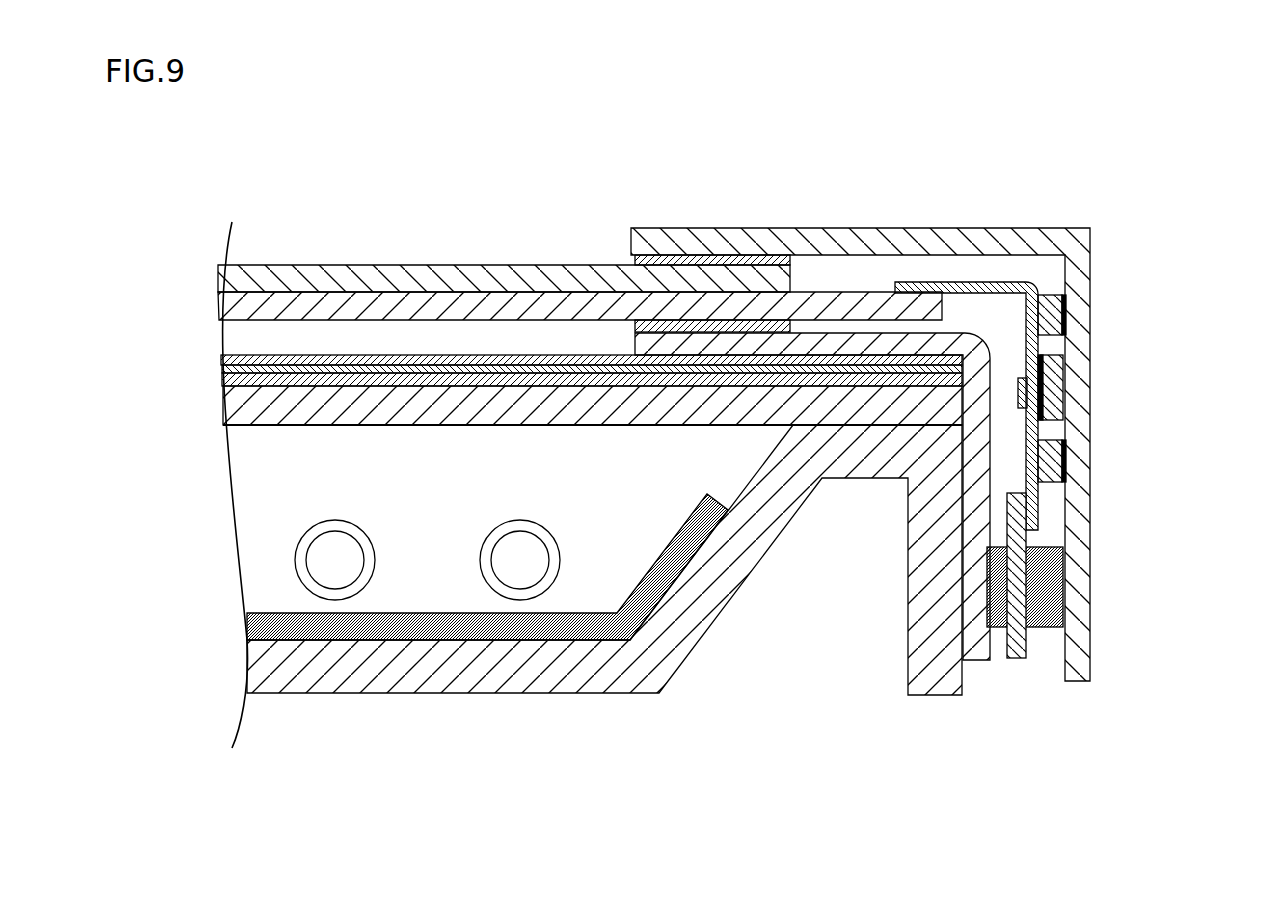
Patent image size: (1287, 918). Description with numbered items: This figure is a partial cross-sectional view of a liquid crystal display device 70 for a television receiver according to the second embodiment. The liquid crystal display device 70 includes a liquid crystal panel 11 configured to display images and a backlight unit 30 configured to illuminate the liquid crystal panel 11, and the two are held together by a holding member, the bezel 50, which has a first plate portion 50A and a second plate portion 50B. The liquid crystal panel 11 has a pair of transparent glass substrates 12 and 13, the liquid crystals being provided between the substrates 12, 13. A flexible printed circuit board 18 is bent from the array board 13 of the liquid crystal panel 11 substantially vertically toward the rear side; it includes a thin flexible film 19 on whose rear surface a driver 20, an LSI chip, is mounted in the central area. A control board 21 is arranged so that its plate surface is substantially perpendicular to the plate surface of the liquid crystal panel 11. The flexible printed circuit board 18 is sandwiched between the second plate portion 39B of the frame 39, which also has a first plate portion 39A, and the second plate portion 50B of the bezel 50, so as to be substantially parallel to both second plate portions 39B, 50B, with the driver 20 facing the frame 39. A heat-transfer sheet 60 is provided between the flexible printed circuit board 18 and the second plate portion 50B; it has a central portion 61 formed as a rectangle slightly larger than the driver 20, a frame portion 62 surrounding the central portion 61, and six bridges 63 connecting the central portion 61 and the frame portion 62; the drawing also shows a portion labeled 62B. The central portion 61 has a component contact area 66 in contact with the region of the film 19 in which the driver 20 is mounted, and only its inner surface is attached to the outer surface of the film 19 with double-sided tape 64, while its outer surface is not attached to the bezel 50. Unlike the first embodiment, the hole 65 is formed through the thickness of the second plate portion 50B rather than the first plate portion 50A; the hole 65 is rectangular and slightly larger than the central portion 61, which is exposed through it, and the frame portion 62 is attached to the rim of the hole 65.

The liquid crystal display device 70 is at (421, 167).
The liquid crystal panel 11 is at (248, 266).
The transparent glass substrate 12 is at (312, 272).
The array board 13 is at (370, 300).
The flexible printed circuit board 18 is at (918, 283).
The film 19 is at (972, 560).
The driver 20 is at (1010, 500).
The control board 21 is at (1020, 600).
The backlight unit 30 is at (591, 575).
The frame 39 is at (710, 338).
The first plate portion of the frame 39A is at (822, 345).
The second plate portion of the frame 39B is at (975, 450).
The bezel 50 is at (975, 230).
The first plate portion of the bezel 50A is at (1022, 229).
The second plate portion of the bezel 50B is at (1088, 547).
The heat-transfer sheet 60 is at (1060, 412).
The central portion 61 is at (1052, 390).
The frame portion 62 is at (1050, 318).
The lower LED substrate 62B is at (1052, 462).
The bridge 63 is at (1050, 346).
The double-sided tape 64 is at (1064, 302).
The hole 65 is at (1044, 380).
The component contact area 66 is at (1022, 400).